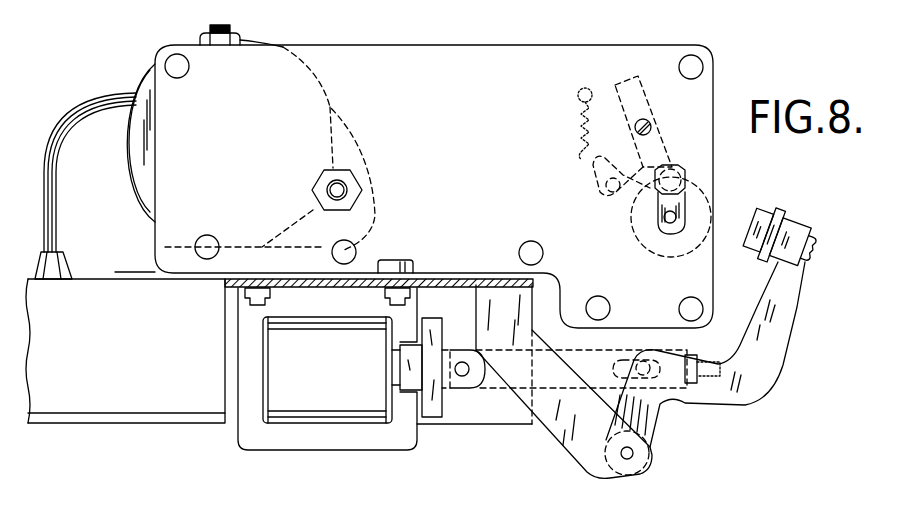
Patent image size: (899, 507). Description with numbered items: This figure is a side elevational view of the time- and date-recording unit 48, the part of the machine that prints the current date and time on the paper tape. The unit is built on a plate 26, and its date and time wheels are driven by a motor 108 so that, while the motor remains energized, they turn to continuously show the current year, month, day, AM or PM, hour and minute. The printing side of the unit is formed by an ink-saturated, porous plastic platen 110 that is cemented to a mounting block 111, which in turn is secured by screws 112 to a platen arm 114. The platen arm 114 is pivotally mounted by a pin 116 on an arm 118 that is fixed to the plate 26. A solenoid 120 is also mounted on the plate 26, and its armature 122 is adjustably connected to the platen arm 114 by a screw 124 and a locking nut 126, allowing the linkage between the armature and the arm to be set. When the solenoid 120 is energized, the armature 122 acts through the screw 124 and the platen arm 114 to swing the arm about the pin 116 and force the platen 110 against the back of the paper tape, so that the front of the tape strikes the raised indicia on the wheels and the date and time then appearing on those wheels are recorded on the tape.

The plate 26 is at (142, 403).
The time- and date-recording unit 48 is at (720, 68).
The motor 108 is at (257, 44).
The platen 110 is at (746, 216).
The mounting block 111 is at (779, 212).
The screws 112 is at (822, 243).
The platen arm 114 is at (782, 333).
The pin 116 is at (633, 454).
The arm 118 is at (560, 440).
The solenoid 120 is at (335, 398).
The armature 122 is at (437, 412).
The screw 124 is at (717, 363).
The locking nut 126 is at (688, 348).